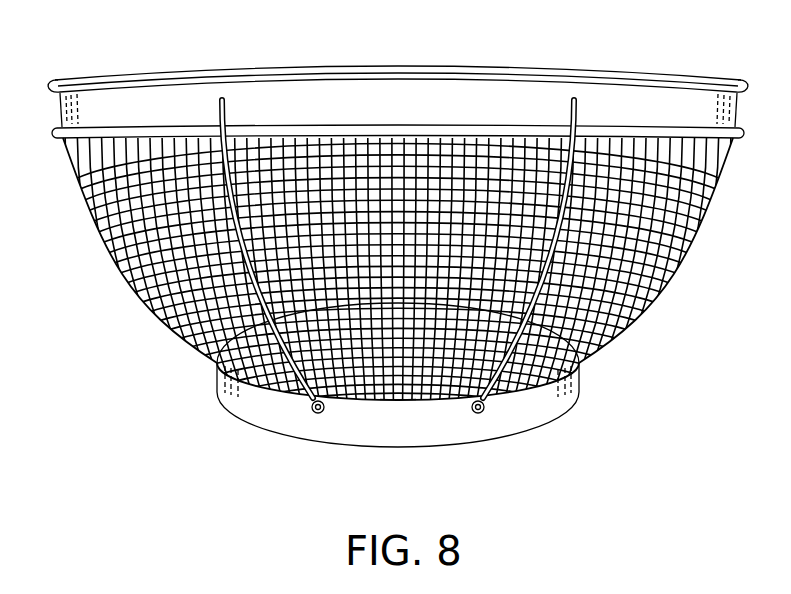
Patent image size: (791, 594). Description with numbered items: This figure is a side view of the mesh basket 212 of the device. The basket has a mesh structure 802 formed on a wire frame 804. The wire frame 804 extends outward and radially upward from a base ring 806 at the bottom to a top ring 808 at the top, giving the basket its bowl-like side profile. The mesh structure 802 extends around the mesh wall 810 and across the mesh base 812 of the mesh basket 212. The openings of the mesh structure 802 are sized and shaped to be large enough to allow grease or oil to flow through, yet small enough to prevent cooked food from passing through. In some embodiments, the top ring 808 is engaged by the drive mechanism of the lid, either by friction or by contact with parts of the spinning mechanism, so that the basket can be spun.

The mesh basket 212 is at (276, 44).
The mesh structure 802 is at (176, 286).
The wire frame 804 is at (218, 356).
The base ring 806 is at (527, 398).
The top ring 808 is at (617, 100).
The mesh wall 810 is at (670, 208).
The mesh base 812 is at (397, 387).